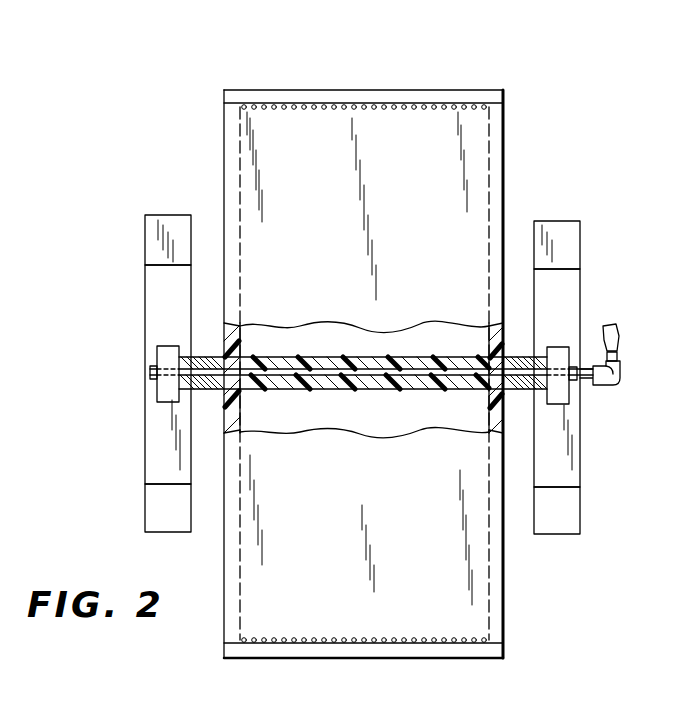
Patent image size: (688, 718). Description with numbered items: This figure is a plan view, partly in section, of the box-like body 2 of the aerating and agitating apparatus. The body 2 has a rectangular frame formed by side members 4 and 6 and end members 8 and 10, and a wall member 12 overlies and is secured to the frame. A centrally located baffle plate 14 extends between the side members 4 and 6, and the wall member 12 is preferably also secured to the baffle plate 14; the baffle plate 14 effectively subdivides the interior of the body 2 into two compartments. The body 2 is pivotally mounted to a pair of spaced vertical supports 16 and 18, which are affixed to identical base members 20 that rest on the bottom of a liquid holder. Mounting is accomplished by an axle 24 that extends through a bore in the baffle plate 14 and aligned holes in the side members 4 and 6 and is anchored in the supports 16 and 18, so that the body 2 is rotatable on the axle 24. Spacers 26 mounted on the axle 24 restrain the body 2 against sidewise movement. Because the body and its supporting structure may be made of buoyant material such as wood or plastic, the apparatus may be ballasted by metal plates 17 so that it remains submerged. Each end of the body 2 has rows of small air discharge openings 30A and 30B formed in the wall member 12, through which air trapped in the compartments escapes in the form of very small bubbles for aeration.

The box-like body 2 is at (516, 592).
The side member 4 is at (505, 130).
The side member 6 is at (224, 124).
The end member 8 is at (402, 90).
The end member 10 is at (443, 659).
The wall member 12 is at (267, 145).
The baffle plate 14 is at (332, 357).
The vertical support 16 is at (559, 347).
The metal plate 17 is at (150, 245).
The vertical support 18 is at (170, 346).
The base member 20 is at (150, 455).
The axle 24 is at (337, 376).
The spacer 26 is at (204, 357).
The air discharge openings 30A is at (373, 641).
The air discharge openings 30B is at (335, 103).